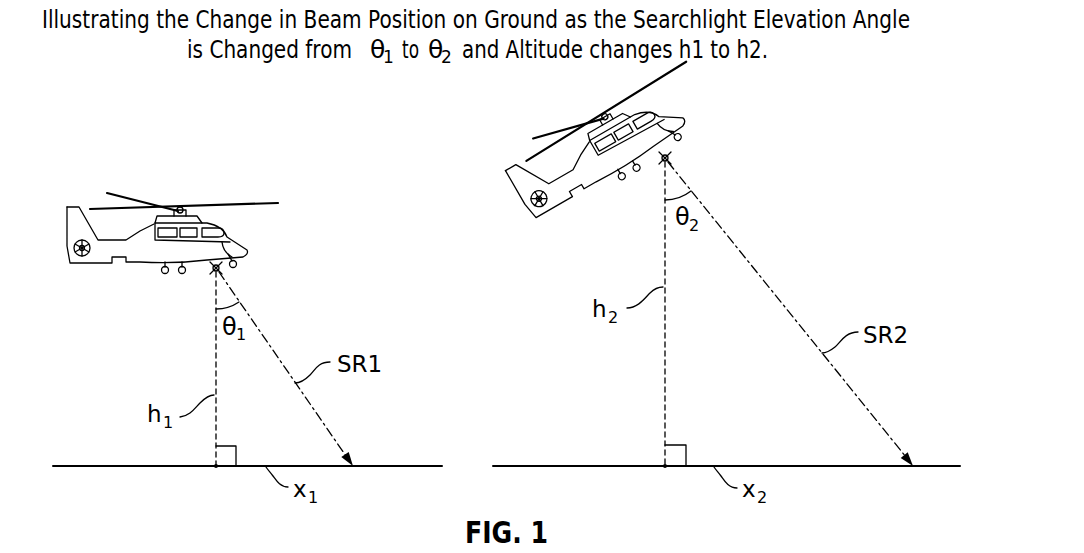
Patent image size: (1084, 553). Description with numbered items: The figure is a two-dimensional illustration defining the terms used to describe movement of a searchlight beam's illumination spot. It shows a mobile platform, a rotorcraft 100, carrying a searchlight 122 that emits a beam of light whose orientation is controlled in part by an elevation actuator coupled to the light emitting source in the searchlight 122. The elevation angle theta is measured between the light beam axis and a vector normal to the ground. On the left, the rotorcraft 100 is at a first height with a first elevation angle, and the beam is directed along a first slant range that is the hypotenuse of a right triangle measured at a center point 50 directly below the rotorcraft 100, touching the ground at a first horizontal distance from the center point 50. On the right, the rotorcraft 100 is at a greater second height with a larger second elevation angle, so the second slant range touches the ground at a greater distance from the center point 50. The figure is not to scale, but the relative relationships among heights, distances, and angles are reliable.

The rotorcraft 100 is at (147, 249).
The searchlight 122 is at (220, 268).
The center point 50 is at (215, 467).